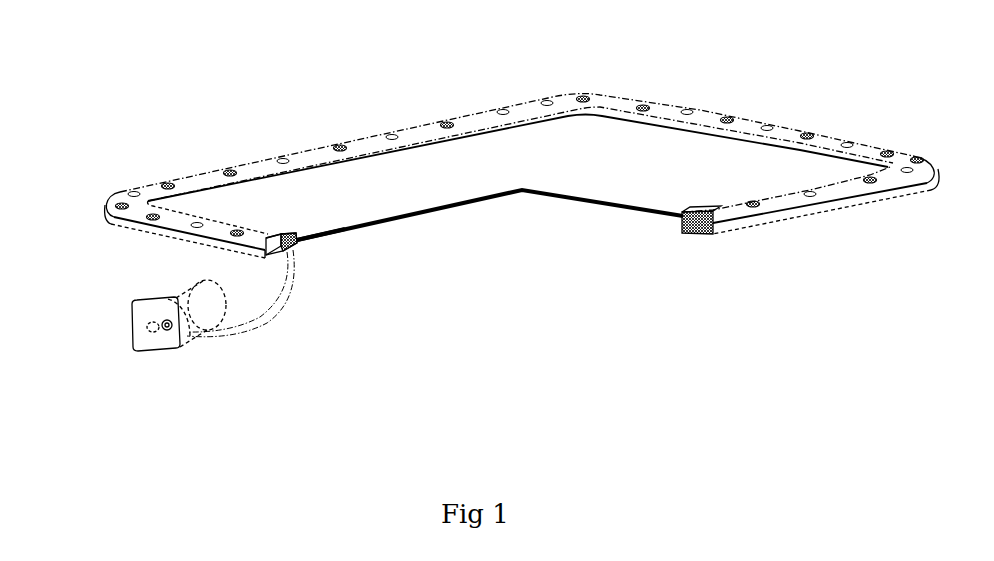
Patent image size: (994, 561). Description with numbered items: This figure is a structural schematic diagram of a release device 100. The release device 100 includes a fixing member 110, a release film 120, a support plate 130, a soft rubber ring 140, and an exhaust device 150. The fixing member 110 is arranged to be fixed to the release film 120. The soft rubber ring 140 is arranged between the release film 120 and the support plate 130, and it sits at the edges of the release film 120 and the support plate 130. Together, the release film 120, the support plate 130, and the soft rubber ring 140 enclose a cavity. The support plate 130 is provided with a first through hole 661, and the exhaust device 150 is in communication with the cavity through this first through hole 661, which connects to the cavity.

The release device 100 is at (522, 181).
The fixing member 110 is at (747, 127).
The release film 120 is at (327, 237).
The support plate 130 is at (551, 197).
The soft rubber ring 140 is at (700, 236).
The exhaust device 150 is at (168, 298).
The first through hole 661 is at (300, 244).